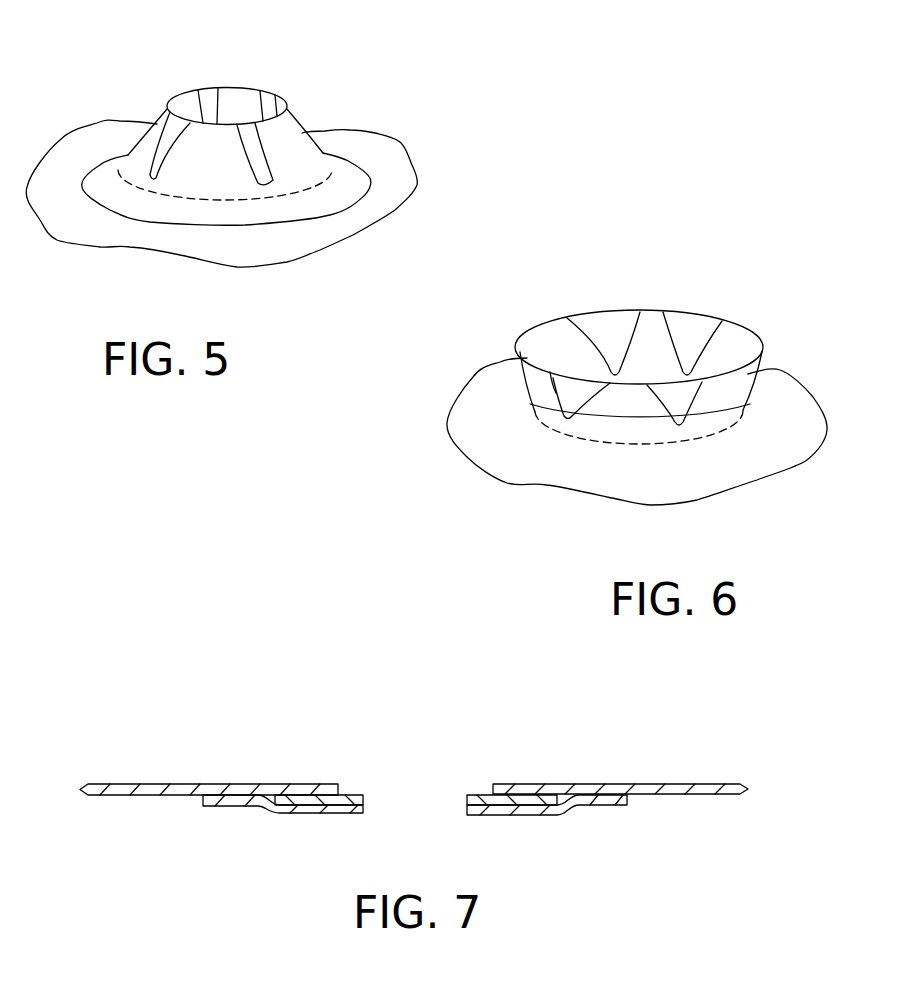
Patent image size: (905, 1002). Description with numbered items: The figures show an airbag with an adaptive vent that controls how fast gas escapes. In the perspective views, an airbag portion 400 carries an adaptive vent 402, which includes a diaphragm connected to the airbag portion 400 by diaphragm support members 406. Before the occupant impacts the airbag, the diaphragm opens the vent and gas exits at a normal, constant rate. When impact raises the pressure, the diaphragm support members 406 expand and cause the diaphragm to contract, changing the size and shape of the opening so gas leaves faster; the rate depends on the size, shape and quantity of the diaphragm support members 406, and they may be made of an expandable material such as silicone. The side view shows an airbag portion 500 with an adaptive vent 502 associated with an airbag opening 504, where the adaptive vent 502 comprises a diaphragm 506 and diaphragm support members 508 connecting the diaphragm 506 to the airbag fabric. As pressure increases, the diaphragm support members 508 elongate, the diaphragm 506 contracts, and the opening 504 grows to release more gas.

In FIG. 5, the airbag portion 400 is at (382, 86).
In FIG. 6, the airbag portion 400 is at (725, 274).
In FIG. 5, the adaptive vent 402 is at (290, 117).
In FIG. 6, the adaptive vent 402 is at (752, 385).
In FIG. 5, the diaphragm support members 406 is at (177, 142).
In FIG. 6, the diaphragm support members 406 is at (572, 398).
In FIG. 7, the airbag portion 500 is at (163, 728).
In FIG. 7, the adaptive vent 502 is at (313, 788).
In FIG. 7, the airbag opening 504 is at (413, 805).
In FIG. 7, the diaphragm 506 is at (287, 800).
In FIG. 7, the diaphragm support members 508 is at (320, 808).